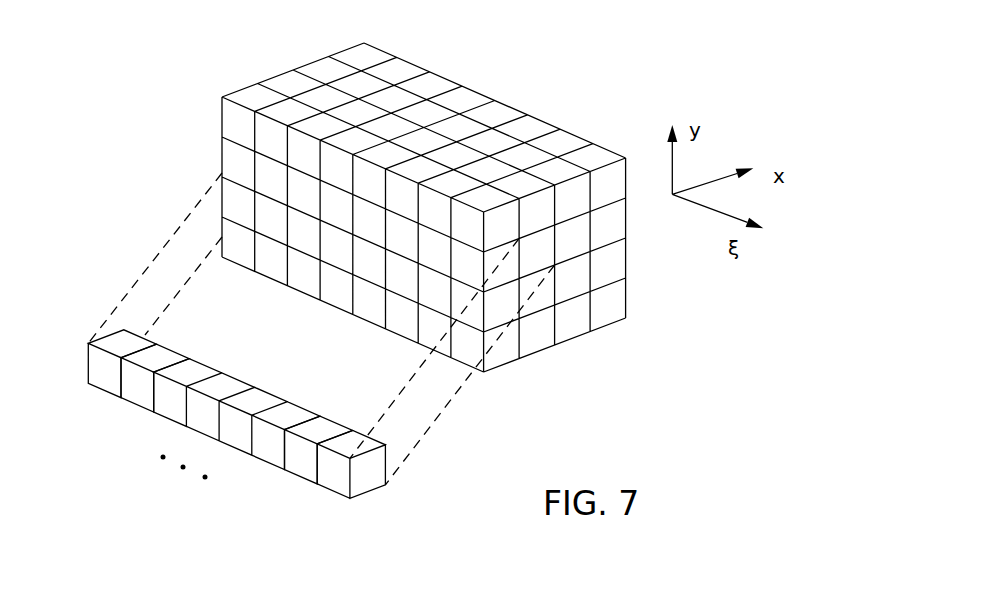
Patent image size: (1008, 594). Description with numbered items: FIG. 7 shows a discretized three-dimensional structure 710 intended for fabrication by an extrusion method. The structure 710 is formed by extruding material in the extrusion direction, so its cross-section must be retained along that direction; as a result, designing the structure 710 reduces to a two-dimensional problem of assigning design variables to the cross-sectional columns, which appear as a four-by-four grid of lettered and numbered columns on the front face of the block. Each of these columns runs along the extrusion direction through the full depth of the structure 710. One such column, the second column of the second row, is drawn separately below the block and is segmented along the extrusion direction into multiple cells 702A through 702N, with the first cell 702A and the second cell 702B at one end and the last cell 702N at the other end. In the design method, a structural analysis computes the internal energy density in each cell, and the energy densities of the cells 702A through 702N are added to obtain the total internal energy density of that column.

The discretized three-dimensional structure 710 is at (322, 97).
The cell 702A is at (92, 376).
The cell 702B is at (130, 392).
The cell 702N is at (330, 482).